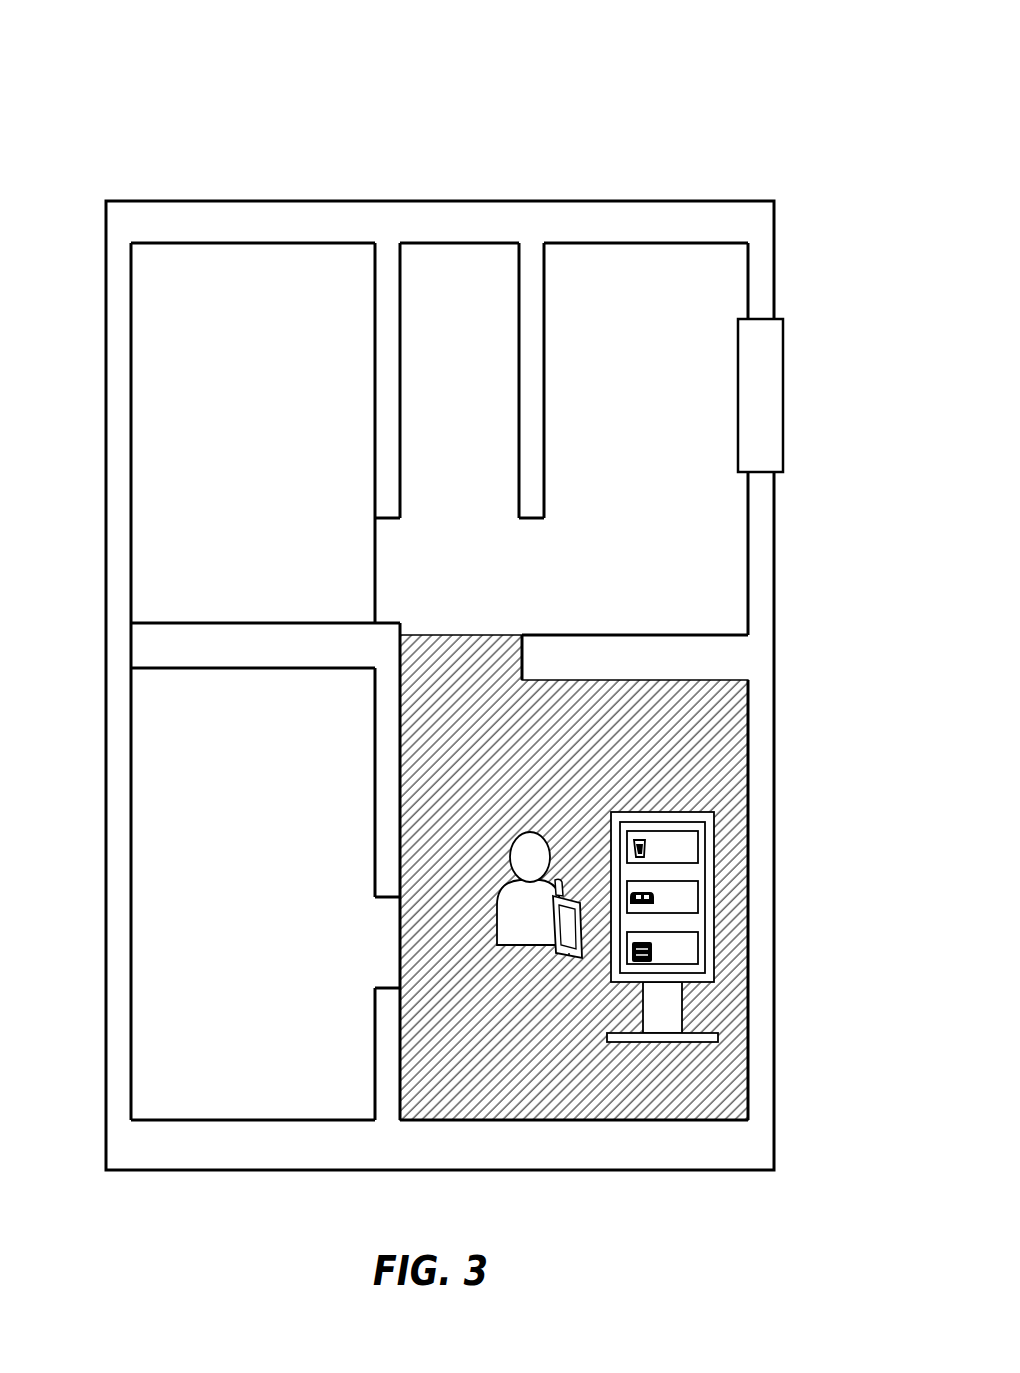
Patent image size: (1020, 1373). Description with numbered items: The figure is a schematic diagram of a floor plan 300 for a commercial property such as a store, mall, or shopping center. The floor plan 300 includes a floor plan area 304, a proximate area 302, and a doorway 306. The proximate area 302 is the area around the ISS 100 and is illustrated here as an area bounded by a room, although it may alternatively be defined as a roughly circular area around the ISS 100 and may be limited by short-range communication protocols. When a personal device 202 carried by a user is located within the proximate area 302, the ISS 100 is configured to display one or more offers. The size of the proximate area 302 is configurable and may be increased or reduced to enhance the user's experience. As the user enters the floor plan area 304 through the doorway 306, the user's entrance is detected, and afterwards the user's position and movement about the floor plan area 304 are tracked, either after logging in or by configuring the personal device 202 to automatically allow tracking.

The floor plan 300 is at (724, 52).
The floor plan area 304 is at (440, 661).
The proximate area 302 is at (539, 841).
The doorway 306 is at (706, 378).
The ISS 100 is at (726, 916).
The personal device 202 is at (560, 946).